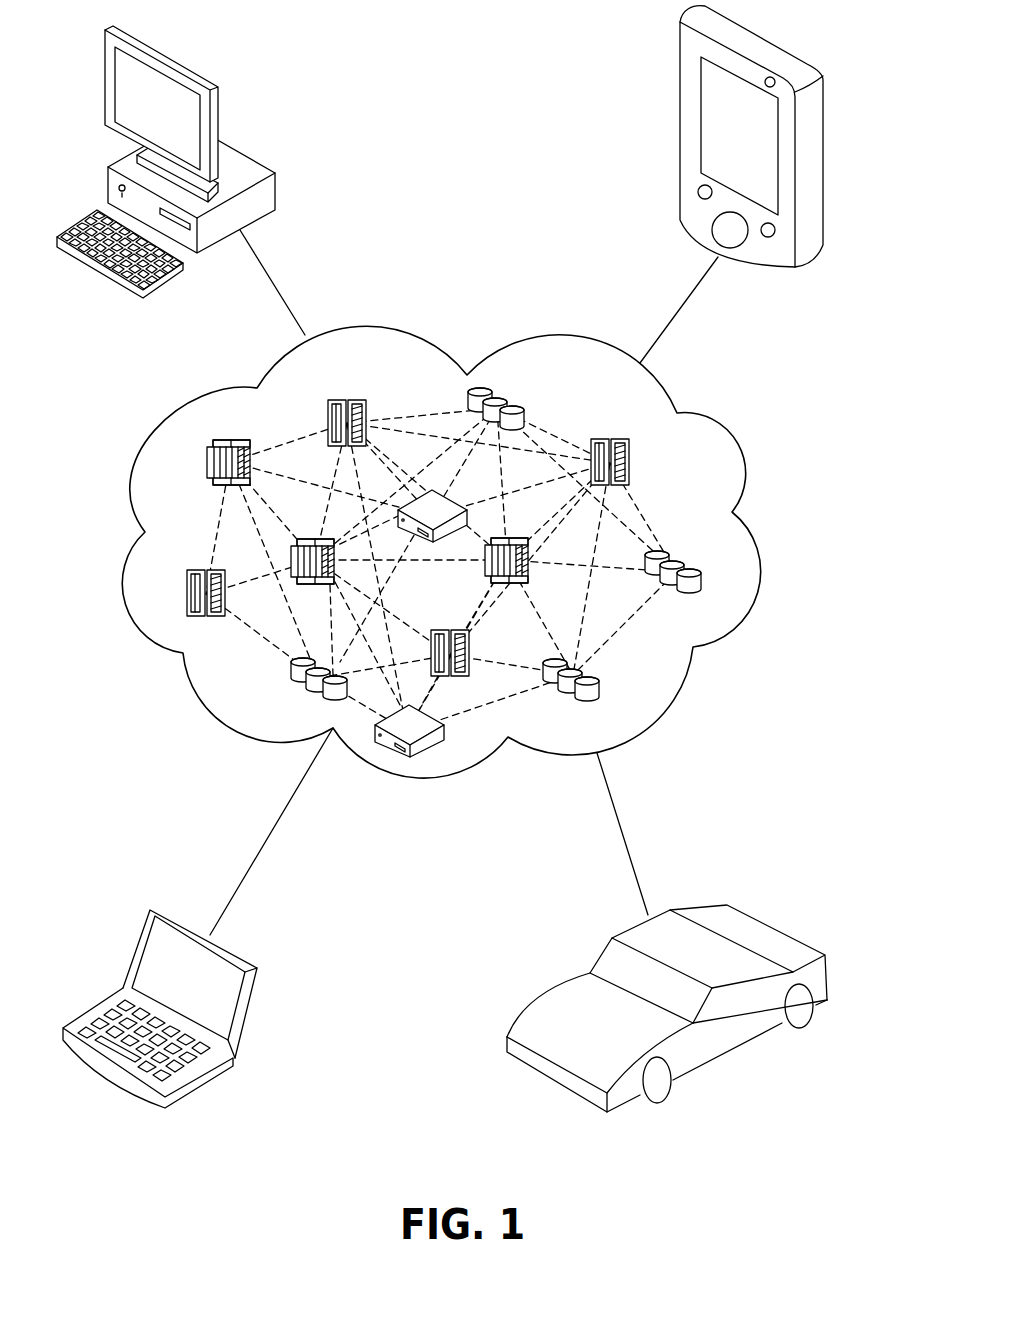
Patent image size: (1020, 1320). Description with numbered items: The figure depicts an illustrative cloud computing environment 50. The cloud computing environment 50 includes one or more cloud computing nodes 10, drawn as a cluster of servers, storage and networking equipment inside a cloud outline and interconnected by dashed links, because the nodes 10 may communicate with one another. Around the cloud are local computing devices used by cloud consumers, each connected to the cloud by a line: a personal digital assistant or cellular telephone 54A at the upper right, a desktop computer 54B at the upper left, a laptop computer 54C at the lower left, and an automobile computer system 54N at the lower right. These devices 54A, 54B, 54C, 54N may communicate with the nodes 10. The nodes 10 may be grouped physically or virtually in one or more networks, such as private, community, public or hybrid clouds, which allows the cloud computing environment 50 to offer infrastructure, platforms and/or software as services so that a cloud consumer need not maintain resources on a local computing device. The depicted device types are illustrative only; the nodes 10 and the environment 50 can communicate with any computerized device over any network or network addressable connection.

The cloud computing nodes 10 is at (676, 488).
The cloud computing environment 50 is at (733, 630).
The personal digital assistant (PDA) or cellular telephone 54A is at (680, 83).
The desktop computer 54B is at (277, 190).
The laptop computer 54C is at (262, 976).
The automobile computer system 54N is at (828, 973).